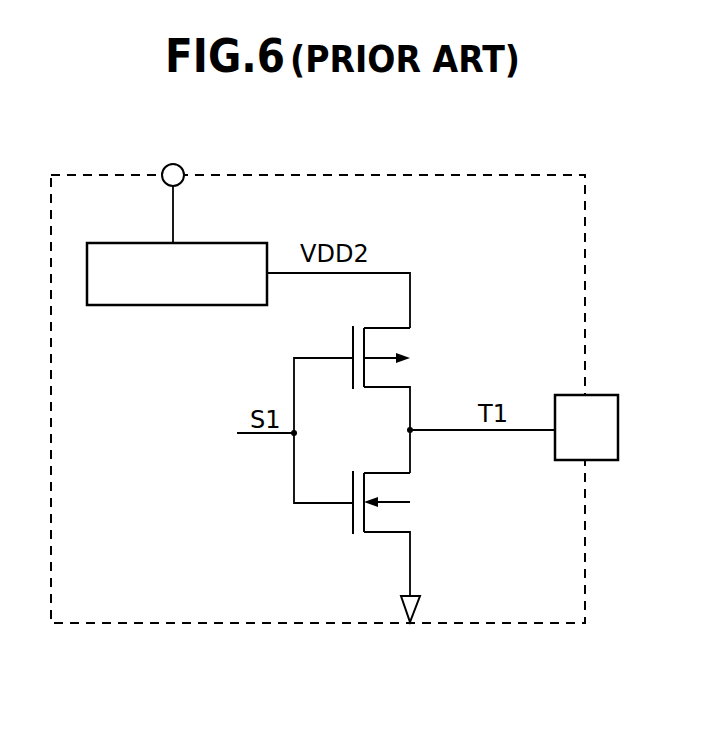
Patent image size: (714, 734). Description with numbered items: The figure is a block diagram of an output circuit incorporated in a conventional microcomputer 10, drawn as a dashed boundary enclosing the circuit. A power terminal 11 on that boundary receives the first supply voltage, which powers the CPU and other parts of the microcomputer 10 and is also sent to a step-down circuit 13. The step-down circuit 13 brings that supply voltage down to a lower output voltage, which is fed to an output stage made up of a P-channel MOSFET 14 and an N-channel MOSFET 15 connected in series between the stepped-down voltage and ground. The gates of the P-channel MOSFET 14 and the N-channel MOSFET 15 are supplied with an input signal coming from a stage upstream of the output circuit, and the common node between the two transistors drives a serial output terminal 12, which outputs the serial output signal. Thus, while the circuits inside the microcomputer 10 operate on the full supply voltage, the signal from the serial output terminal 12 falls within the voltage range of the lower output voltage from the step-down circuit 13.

The microcomputer 10 is at (586, 273).
The power terminal 11 is at (181, 167).
The serial output terminal 12 is at (619, 420).
The step-down circuit 13 is at (190, 306).
The P-channel MOSFET 14 is at (408, 337).
The N-channel MOSFET 15 is at (405, 490).